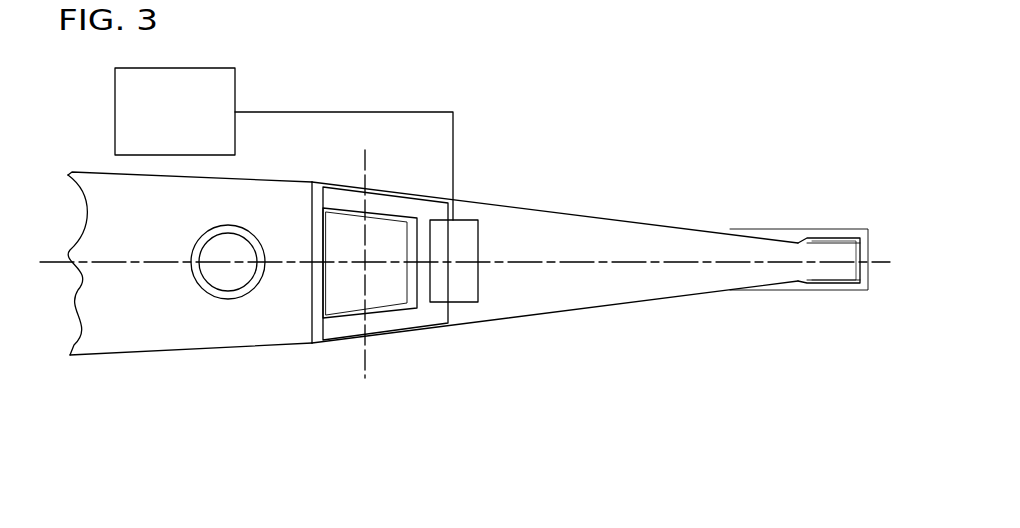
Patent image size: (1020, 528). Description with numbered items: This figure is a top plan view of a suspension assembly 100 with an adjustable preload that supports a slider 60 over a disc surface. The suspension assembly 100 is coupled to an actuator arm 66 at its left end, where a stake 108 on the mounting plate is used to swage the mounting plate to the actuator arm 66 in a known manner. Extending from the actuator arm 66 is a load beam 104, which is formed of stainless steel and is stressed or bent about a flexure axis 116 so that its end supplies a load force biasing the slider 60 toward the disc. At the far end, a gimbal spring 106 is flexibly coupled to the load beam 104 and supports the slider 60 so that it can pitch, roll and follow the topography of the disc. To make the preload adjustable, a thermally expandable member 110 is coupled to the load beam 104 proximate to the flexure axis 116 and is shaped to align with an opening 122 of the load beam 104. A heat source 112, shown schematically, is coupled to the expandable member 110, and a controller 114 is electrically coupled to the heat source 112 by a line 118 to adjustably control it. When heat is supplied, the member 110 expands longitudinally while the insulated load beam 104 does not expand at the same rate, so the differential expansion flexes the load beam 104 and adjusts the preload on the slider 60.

The slider 60 is at (815, 242).
The actuator arm 66 is at (117, 302).
The suspension assembly 100 is at (603, 217).
The load beam 104 is at (607, 288).
The gimbal spring 106 is at (790, 238).
The stake 108 is at (247, 290).
The thermally expandable member 110 is at (407, 318).
The heat source 112 is at (473, 245).
The controller 114 is at (170, 68).
The flexure axis 116 is at (365, 350).
The line 118 is at (316, 112).
The opening 122 is at (340, 236).